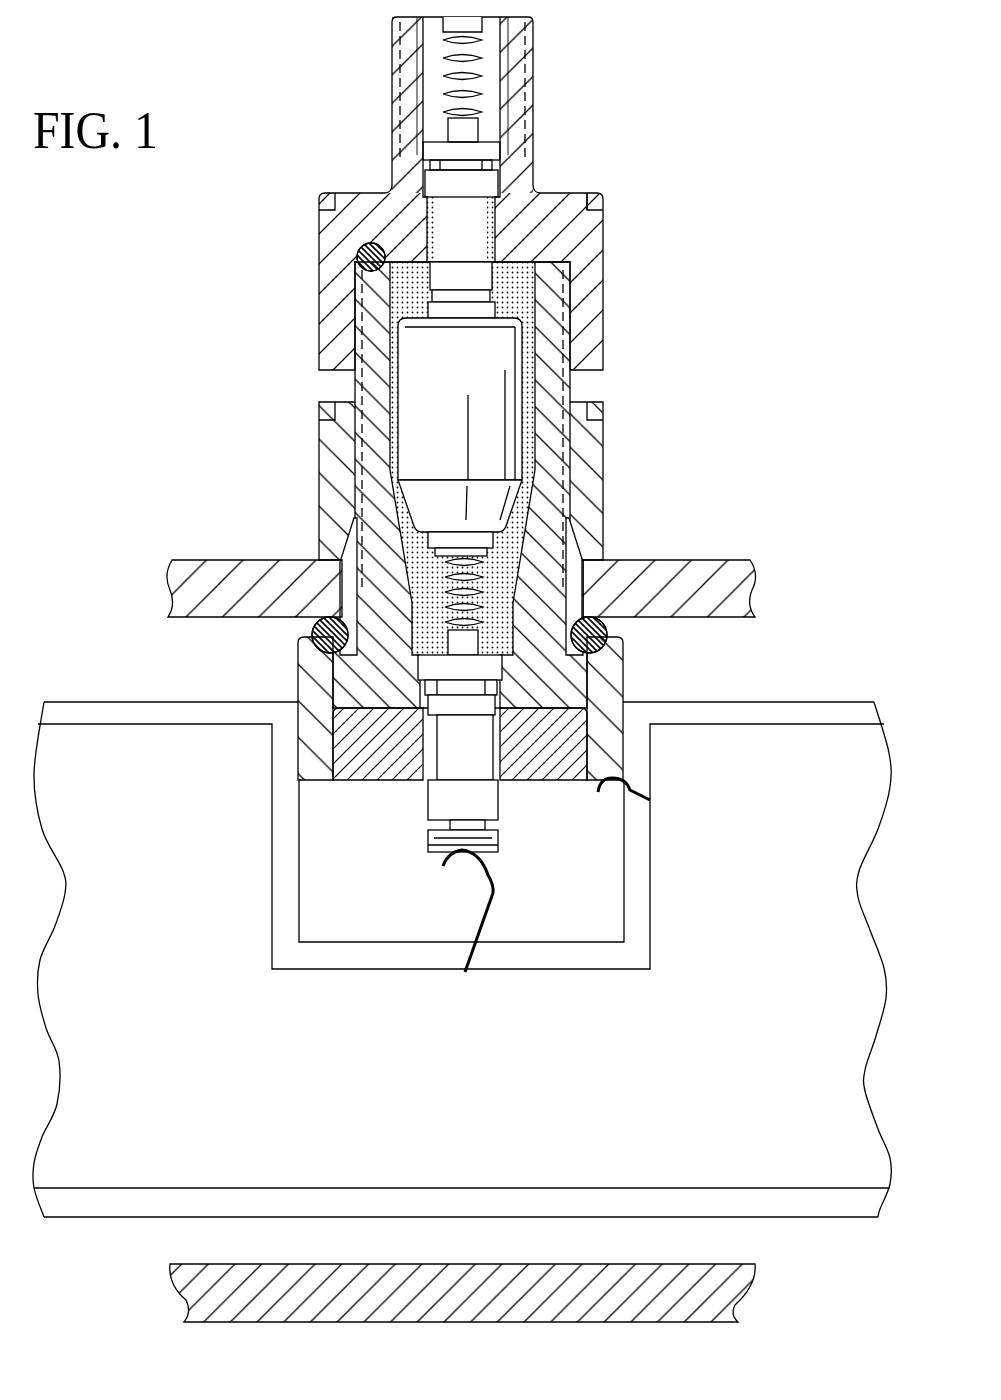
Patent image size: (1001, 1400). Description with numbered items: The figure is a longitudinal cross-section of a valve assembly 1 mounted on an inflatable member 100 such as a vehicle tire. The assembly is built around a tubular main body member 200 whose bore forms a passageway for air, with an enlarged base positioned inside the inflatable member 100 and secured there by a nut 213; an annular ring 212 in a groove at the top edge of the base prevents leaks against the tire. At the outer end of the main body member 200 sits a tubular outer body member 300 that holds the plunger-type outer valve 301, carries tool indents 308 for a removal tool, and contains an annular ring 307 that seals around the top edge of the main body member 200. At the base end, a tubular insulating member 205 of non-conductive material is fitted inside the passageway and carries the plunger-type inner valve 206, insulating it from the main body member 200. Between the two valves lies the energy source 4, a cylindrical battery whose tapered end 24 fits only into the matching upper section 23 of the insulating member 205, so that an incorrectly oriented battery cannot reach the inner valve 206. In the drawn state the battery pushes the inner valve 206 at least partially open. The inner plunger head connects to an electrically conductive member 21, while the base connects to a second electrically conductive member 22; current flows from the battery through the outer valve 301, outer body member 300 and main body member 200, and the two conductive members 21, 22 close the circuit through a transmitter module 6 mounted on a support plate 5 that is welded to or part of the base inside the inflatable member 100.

The valve assembly 1 is at (474, 434).
The energy source 4 is at (432, 408).
The support plate 5 is at (768, 712).
The transmitter module 6 is at (823, 743).
The electrically conductive member 21 is at (493, 890).
The second electrically conductive member 22 is at (650, 798).
The upper section 23 is at (560, 582).
The tapered end 24 is at (418, 502).
The inflatable member 100 is at (180, 568).
The main body member 200 is at (547, 390).
The insulating member 205 is at (520, 695).
The inner valve 206 is at (455, 737).
The annular ring 212 is at (610, 627).
The nut 213 is at (591, 464).
The outer body member 300 is at (590, 240).
The outer valve 301 is at (463, 218).
The annular ring 307 is at (358, 249).
The tool indents 308 is at (593, 210).